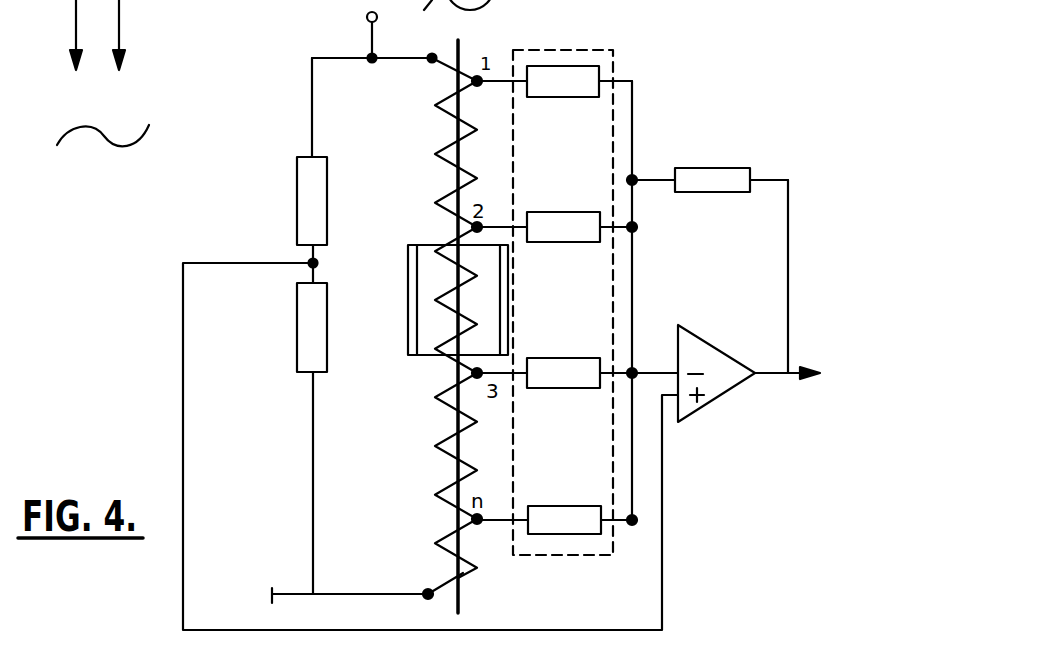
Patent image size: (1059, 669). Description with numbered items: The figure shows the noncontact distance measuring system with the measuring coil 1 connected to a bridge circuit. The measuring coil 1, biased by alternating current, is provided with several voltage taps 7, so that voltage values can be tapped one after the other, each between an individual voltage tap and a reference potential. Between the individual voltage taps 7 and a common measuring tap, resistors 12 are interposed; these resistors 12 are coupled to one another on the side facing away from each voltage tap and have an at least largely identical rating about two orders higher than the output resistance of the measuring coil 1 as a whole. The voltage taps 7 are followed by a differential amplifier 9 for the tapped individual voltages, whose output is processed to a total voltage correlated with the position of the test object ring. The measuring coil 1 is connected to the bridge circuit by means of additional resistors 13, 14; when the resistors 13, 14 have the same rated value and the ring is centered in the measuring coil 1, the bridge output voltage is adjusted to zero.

The measuring coil 1 is at (447, 60).
The voltage taps 7 is at (479, 86).
The differential amplifier 9 is at (717, 388).
The resistors 12 is at (587, 556).
The additional resistor 13 is at (302, 176).
The additional resistor 14 is at (310, 331).